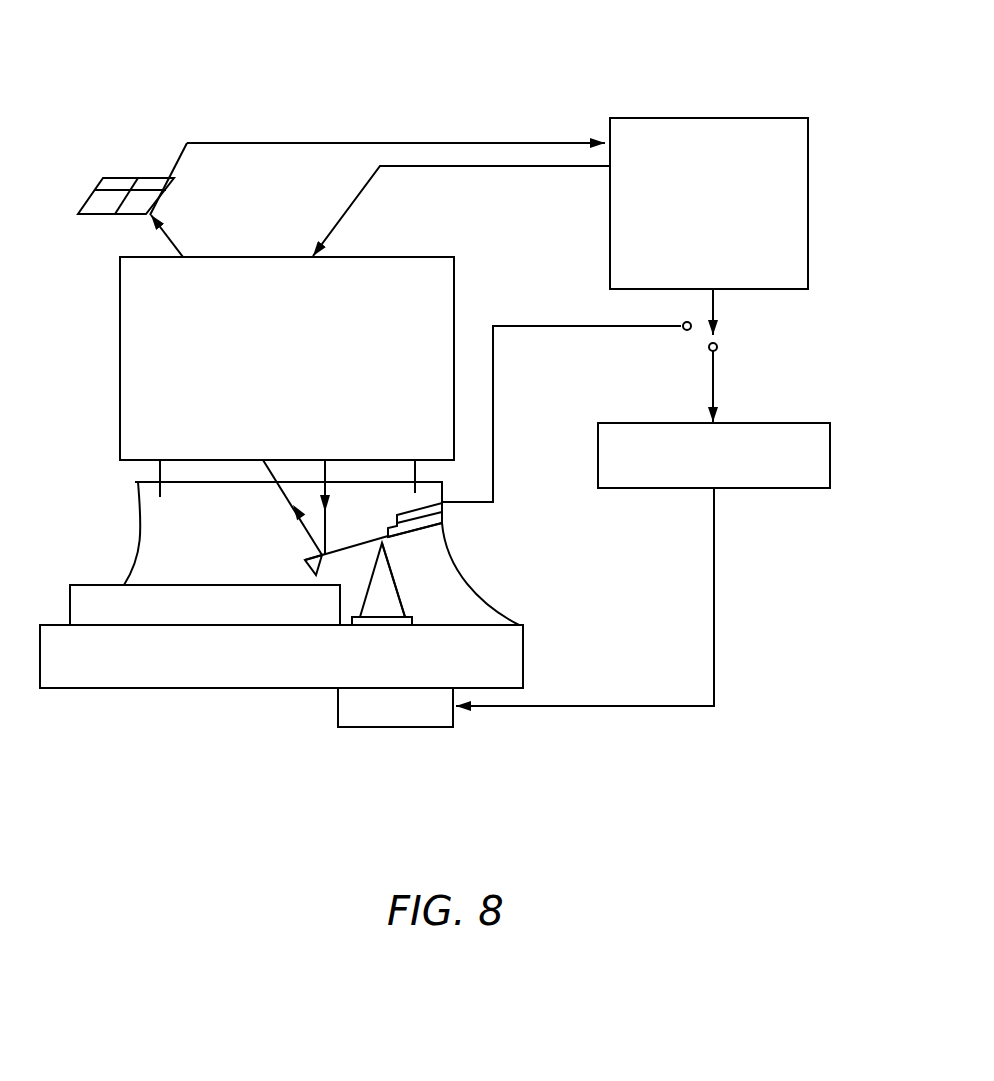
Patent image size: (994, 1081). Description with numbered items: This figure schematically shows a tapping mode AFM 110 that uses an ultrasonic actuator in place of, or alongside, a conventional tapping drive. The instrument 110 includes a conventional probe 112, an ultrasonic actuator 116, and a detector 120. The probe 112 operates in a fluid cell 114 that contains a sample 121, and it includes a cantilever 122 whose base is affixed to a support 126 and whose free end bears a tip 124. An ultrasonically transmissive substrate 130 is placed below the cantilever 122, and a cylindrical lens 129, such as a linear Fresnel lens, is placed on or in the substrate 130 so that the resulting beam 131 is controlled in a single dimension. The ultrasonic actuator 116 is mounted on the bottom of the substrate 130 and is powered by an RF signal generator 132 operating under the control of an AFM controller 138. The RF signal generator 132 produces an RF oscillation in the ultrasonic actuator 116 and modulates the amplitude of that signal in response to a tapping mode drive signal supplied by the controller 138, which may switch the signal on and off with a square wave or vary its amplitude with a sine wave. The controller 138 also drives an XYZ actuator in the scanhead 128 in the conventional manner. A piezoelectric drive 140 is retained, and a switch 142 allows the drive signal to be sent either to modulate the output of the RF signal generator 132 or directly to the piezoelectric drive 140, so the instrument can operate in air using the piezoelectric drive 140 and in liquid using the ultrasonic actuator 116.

The tapping mode AFM 110 is at (702, 68).
The AFM controller 138 is at (752, 118).
The switch 142 is at (713, 300).
The RF signal generator 132 is at (760, 423).
The scanhead 128 is at (410, 257).
The detector 120 is at (118, 178).
The fluid cell 114 is at (483, 597).
The probe 112 is at (342, 545).
The tip 124 is at (303, 562).
The piezoelectric drive 140 is at (445, 510).
The support 126 is at (447, 525).
The cantilever 122 is at (387, 547).
The beam 131 is at (400, 595).
The cylindrical lens 129 is at (380, 620).
The sample 121 is at (90, 585).
The ultrasonically transmissive substrate 130 is at (524, 658).
The ultrasonic actuator 116 is at (385, 728).